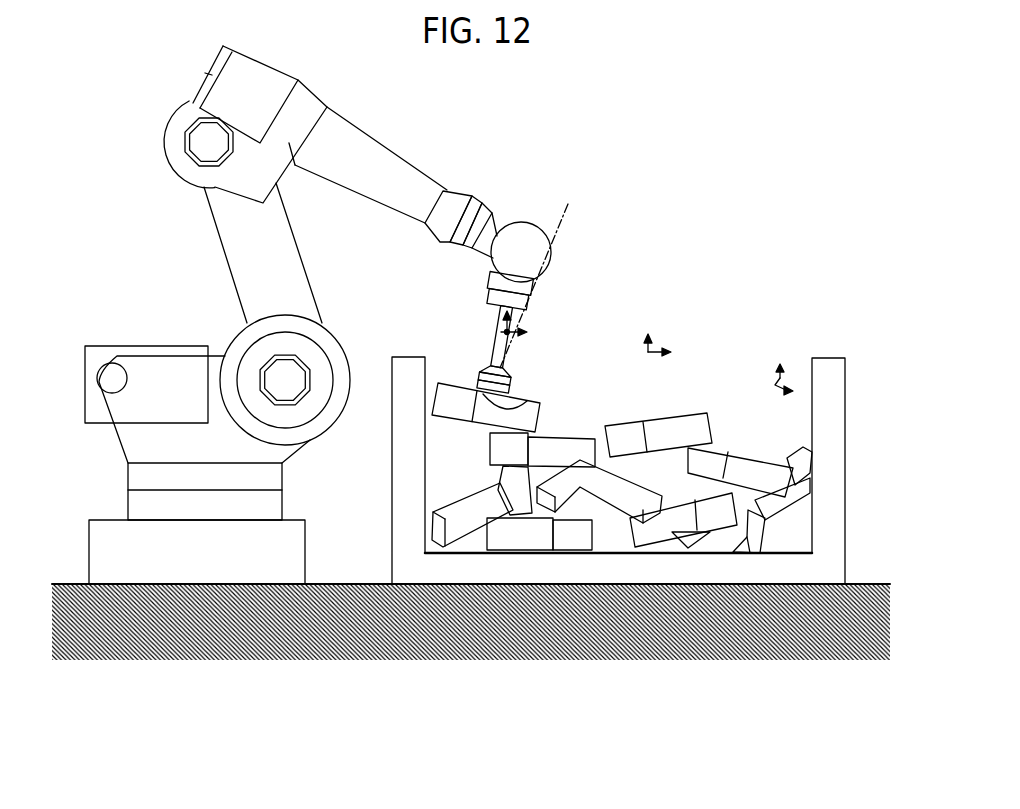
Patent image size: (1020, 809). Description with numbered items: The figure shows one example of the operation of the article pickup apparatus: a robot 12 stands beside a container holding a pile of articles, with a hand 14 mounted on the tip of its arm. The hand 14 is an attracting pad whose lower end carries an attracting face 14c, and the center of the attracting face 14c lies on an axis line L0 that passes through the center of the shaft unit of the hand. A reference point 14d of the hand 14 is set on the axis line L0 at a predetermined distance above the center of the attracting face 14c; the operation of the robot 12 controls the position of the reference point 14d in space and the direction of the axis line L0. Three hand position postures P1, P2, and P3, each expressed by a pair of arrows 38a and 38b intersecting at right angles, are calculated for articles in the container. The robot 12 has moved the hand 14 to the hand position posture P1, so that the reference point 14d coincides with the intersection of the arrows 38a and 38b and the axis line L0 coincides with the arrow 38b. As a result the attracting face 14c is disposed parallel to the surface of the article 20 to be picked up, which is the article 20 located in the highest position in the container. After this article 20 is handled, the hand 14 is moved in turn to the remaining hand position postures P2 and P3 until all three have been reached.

The robot 12 is at (152, 346).
The hand 14 is at (482, 353).
The attracting face 14c is at (527, 402).
The reference point 14d is at (493, 333).
The article 20 is at (456, 392).
The arrow 38a is at (522, 333).
The arrow 38b is at (488, 311).
The axis line L0 is at (552, 279).
The hand position posture P1 is at (524, 337).
The hand position posture P2 is at (648, 352).
The hand position posture P3 is at (780, 367).